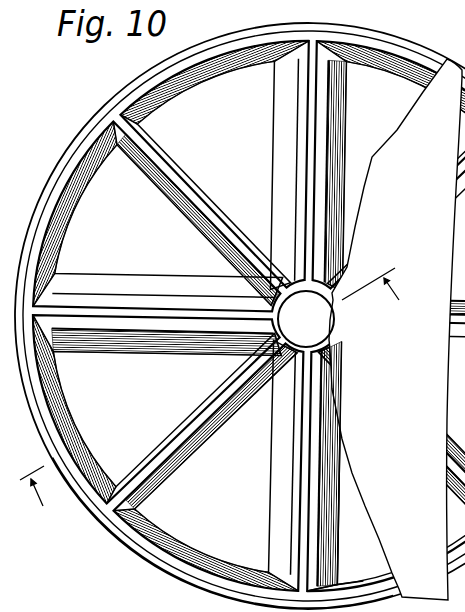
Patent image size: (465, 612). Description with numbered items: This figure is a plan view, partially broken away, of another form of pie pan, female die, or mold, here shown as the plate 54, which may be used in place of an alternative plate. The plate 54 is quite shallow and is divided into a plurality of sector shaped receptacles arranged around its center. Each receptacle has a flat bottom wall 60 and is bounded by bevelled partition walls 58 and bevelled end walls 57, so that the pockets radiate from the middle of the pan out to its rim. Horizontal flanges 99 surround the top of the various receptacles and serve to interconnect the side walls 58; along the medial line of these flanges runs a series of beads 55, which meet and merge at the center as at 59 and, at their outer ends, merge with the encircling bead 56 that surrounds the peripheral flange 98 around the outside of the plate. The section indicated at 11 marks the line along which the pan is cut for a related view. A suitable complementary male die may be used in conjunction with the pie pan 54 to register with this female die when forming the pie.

The section line 11- 11 is at (218, 396).
The plate 54 is at (237, 315).
The beads 55 is at (205, 205).
The encircling bead 56 is at (123, 551).
The end walls 57 is at (75, 423).
The partition walls 58 is at (185, 153).
The center 59 is at (283, 331).
The flat bottom wall 60 is at (207, 464).
The peripheral flange 98 is at (173, 569).
The horizontal flanges 99 is at (315, 448).